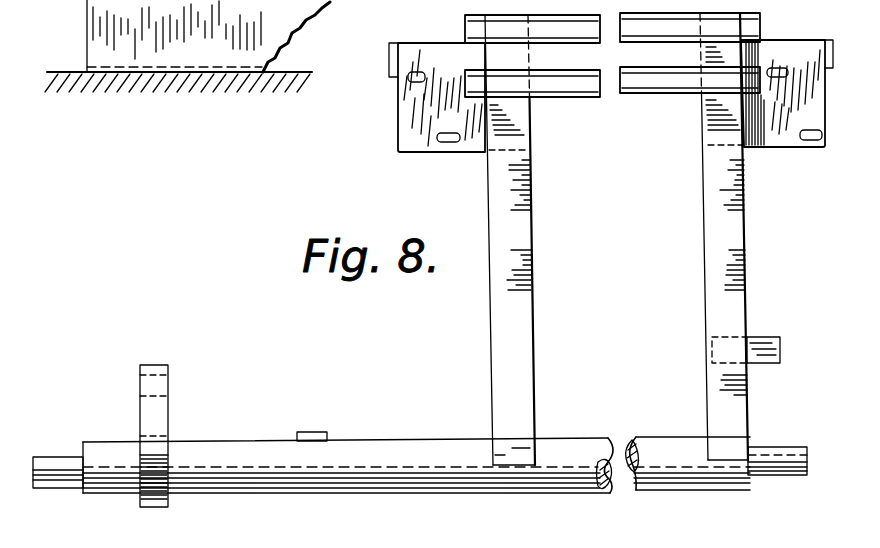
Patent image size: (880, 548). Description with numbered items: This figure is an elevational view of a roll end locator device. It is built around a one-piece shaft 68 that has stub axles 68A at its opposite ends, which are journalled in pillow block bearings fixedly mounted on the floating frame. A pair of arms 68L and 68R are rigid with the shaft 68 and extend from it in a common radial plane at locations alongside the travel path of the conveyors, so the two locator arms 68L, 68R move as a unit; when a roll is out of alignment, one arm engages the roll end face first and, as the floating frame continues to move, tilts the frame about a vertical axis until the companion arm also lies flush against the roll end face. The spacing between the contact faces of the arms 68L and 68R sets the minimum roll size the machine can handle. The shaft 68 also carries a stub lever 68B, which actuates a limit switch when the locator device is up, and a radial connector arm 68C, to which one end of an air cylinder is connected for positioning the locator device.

The one-piece shaft 68 is at (348, 475).
The stub axle 68A is at (67, 478).
The stub lever 68B is at (313, 437).
The radial connector arm 68C is at (152, 414).
The left locator arm 68L is at (500, 298).
The right locator arm 68R is at (712, 267).